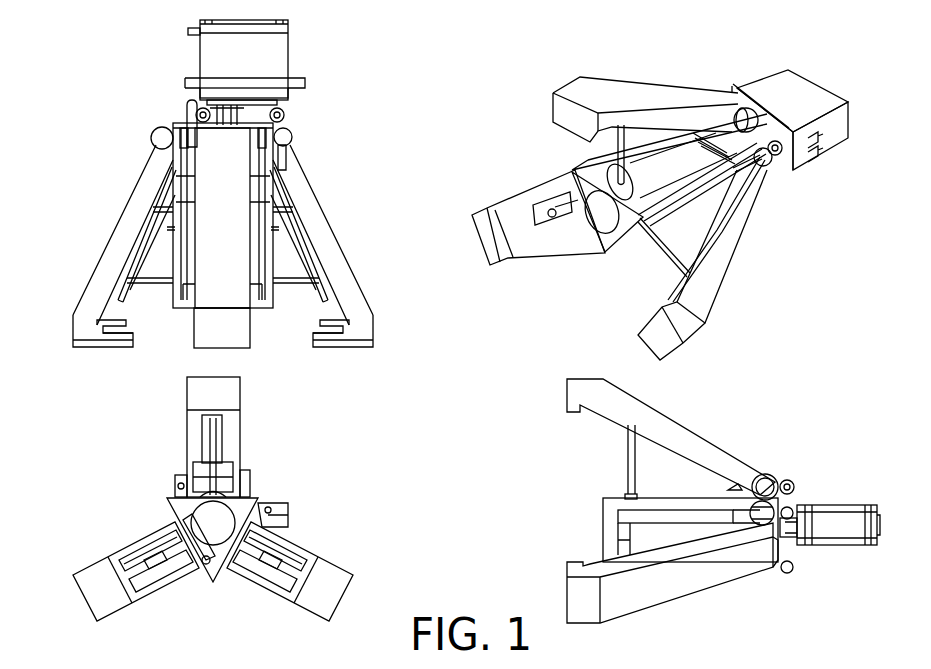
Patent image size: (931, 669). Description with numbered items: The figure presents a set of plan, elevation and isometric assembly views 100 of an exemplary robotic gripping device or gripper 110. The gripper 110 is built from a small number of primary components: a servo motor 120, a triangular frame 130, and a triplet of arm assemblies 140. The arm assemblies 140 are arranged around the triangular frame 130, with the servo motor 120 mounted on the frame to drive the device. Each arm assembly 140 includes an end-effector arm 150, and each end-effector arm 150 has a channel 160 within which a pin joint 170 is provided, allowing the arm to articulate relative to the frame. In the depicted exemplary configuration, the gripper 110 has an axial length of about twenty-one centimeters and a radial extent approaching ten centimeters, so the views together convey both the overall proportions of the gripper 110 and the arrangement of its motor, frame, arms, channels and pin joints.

The assembly views 100 is at (108, 88).
The robotic gripping device 110 is at (468, 38).
The servo motor 120 is at (322, 15).
The triangular frame 130 is at (260, 310).
The arm assemblies 140 is at (145, 380).
The end-effector arm 150 is at (127, 200).
The channel 160 is at (263, 583).
The pin joint 170 is at (117, 553).